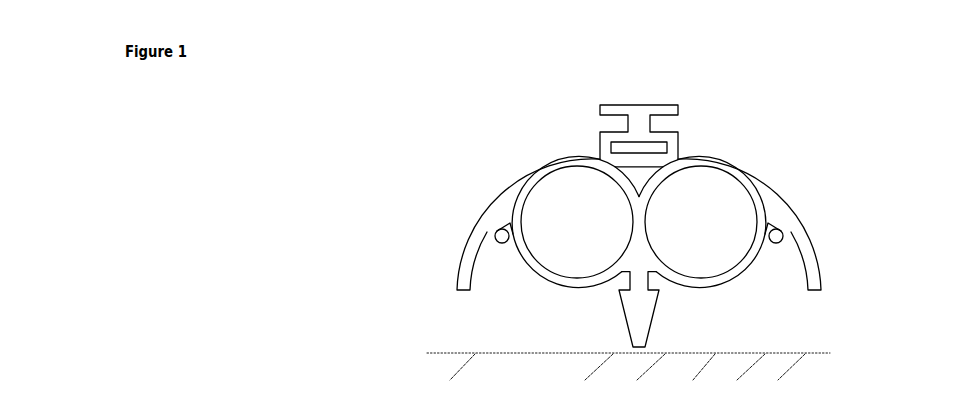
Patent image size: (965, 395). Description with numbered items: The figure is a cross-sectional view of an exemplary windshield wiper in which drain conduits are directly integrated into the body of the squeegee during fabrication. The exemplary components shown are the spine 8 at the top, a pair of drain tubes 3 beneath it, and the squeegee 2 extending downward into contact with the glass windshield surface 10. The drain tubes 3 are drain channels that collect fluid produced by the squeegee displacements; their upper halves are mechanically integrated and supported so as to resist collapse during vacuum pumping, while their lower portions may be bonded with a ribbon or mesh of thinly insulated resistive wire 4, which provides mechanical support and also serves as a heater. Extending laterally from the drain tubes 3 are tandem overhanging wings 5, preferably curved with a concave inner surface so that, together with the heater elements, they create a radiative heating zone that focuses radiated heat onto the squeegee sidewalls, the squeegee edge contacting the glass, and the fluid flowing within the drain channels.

The squeegee 2 is at (648, 322).
The drain tube 3 is at (558, 213).
The resistive wire 4 is at (500, 236).
The overhanging wings 5 is at (467, 262).
The spine 8 is at (614, 108).
The glass windshield surface 10 is at (787, 353).